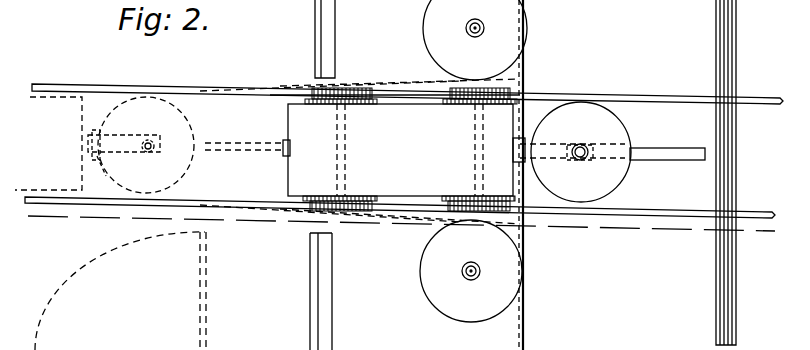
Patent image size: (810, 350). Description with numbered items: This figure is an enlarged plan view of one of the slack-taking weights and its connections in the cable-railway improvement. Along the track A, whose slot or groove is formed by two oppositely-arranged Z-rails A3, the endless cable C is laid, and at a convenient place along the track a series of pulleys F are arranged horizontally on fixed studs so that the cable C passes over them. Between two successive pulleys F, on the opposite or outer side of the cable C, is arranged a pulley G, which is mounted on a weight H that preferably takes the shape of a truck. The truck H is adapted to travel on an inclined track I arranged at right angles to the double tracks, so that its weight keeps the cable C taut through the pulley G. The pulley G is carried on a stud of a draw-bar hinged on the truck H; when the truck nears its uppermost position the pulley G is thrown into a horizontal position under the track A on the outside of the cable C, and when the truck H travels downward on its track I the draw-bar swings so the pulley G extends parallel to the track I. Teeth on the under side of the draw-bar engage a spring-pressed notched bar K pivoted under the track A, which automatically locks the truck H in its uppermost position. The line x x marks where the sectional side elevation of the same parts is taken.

The track A is at (407, 54).
The inclined track I is at (240, 207).
The weight H is at (406, 149).
The pulleys F is at (442, 293).
The pulley G is at (583, 113).
The spring-pressed notched bar K is at (675, 147).
The endless cable C is at (527, 312).
The section line x is at (401, 228).
The Z-rails A3 is at (548, 344).